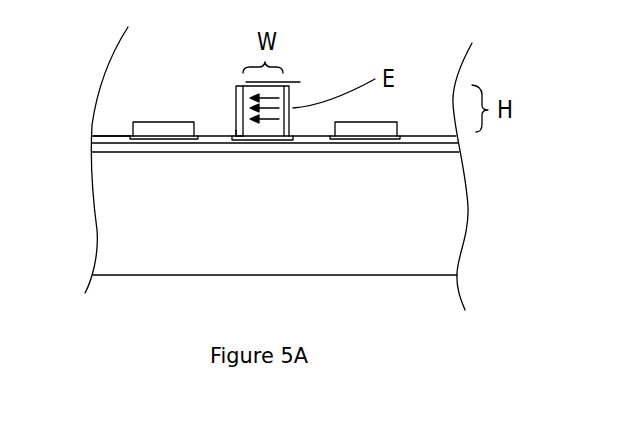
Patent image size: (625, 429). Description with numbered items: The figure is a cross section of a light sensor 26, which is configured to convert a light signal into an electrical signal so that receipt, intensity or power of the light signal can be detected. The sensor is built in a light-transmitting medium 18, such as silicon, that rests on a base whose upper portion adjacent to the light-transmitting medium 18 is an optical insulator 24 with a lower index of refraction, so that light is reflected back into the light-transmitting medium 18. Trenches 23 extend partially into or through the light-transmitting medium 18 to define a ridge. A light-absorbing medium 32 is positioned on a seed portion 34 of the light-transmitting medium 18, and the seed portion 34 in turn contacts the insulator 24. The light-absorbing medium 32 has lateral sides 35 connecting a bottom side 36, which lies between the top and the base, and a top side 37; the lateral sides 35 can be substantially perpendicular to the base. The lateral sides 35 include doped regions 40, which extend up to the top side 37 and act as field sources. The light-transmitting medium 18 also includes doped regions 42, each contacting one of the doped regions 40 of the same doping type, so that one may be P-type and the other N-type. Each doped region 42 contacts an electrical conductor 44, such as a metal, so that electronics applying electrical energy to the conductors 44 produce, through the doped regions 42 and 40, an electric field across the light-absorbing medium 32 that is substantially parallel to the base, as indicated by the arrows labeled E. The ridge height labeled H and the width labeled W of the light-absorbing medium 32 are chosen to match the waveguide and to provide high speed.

The light-transmitting medium 18 is at (92, 143).
The trenches 23 is at (101, 133).
The optical insulator 24 is at (319, 153).
The light sensor 26 is at (220, 255).
The light-absorbing medium 32 is at (239, 88).
The seed portion 34 is at (264, 140).
The lateral sides 35 is at (237, 115).
The bottom side 36 is at (289, 121).
The top side 37 is at (300, 82).
The doped regions 40 is at (289, 101).
The doped regions 42 is at (167, 139).
The electrical conductor 44 is at (152, 123).